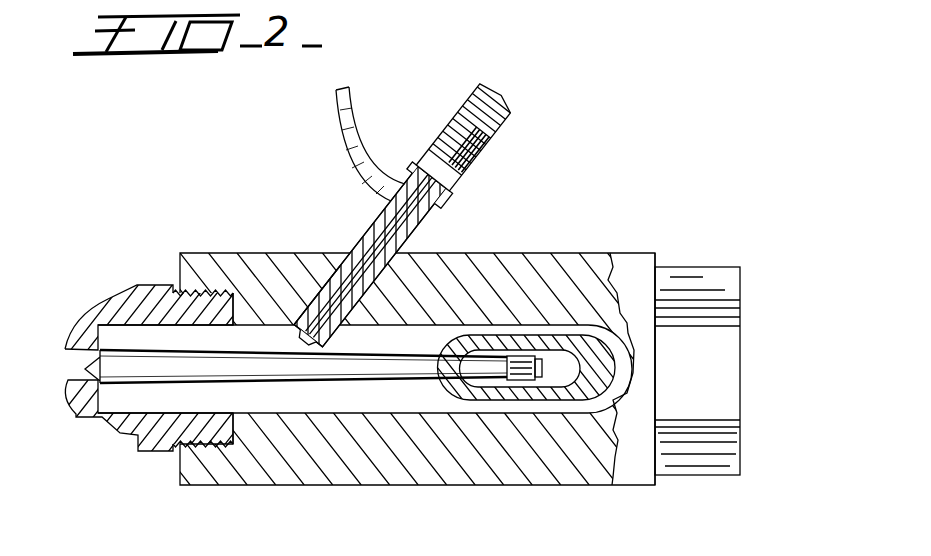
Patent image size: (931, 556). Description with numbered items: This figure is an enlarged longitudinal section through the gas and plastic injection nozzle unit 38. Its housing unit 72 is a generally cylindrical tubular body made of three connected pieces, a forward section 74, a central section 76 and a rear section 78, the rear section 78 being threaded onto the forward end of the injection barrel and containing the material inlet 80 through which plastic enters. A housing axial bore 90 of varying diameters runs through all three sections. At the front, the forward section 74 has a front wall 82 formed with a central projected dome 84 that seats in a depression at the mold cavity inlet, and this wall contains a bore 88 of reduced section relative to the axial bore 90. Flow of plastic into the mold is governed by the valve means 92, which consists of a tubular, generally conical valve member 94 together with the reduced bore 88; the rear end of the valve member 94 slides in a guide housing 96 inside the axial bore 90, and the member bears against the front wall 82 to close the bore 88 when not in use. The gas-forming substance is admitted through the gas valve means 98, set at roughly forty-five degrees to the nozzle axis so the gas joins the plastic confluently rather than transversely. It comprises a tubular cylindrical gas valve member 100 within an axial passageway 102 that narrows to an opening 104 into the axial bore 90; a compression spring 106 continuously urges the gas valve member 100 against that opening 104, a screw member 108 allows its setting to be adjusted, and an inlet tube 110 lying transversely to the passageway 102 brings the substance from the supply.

The injection nozzle unit 38 is at (509, 250).
The housing unit 72 is at (555, 251).
The forward section 74 is at (152, 285).
The central section 76 is at (226, 262).
The rear section 78 is at (682, 269).
The material inlet 80 is at (727, 360).
The front wall 82 is at (104, 322).
The central projected dome 84 is at (80, 341).
The bore 88 is at (92, 400).
The housing axial bore 90 is at (388, 410).
The valve means 92 is at (265, 386).
The valve member 94 is at (331, 367).
The guide housing 96 is at (462, 389).
The gas valve means 98 is at (351, 228).
The gas valve member 100 is at (333, 282).
The axial passageway 102 is at (372, 228).
The opening 104 is at (290, 276).
The compression spring 106 is at (447, 140).
The screw member 108 is at (491, 83).
The inlet tube 110 is at (378, 133).